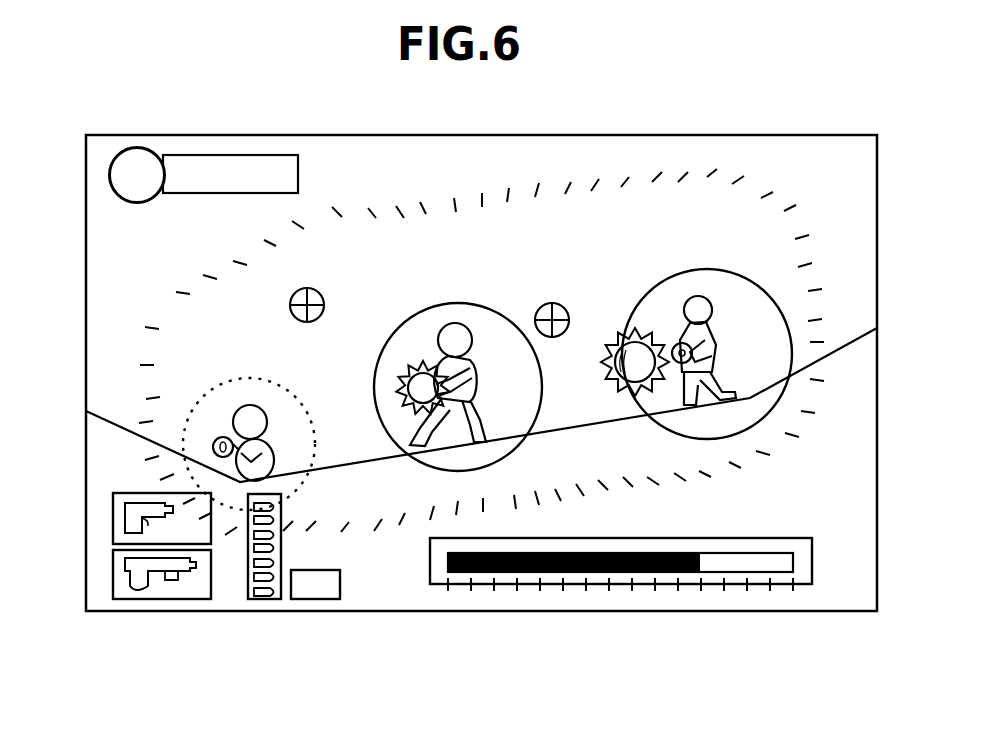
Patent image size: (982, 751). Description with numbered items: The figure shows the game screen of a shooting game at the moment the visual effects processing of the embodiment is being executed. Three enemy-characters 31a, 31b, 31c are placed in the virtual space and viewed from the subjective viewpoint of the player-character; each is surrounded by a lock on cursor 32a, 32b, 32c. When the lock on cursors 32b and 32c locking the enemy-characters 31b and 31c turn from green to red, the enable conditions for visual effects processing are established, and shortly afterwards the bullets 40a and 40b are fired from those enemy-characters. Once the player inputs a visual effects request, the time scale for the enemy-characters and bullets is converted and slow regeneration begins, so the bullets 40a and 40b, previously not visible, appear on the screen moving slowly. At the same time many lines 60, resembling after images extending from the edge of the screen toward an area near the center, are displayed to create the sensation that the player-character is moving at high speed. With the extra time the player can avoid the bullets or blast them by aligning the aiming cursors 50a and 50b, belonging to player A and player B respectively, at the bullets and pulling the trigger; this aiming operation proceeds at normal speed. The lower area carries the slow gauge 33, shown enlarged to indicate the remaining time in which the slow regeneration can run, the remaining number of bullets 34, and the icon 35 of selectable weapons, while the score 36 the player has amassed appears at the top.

The enemy-character 31a is at (250, 413).
The enemy-character 31b is at (457, 338).
The enemy-character 31c is at (698, 310).
The lock on cursor 32a is at (215, 385).
The lock on cursor 32b is at (422, 307).
The lock on cursor 32c is at (663, 292).
The slow gauge 33 is at (622, 585).
The remaining number of bullets 34 is at (314, 600).
The icon 35 is at (113, 520).
The score 36 is at (246, 155).
The bullet 40a is at (412, 380).
The bullet 40b is at (630, 341).
The aiming cursor 50a is at (548, 303).
The aiming cursor 50b is at (316, 290).
The lines 60 is at (733, 190).